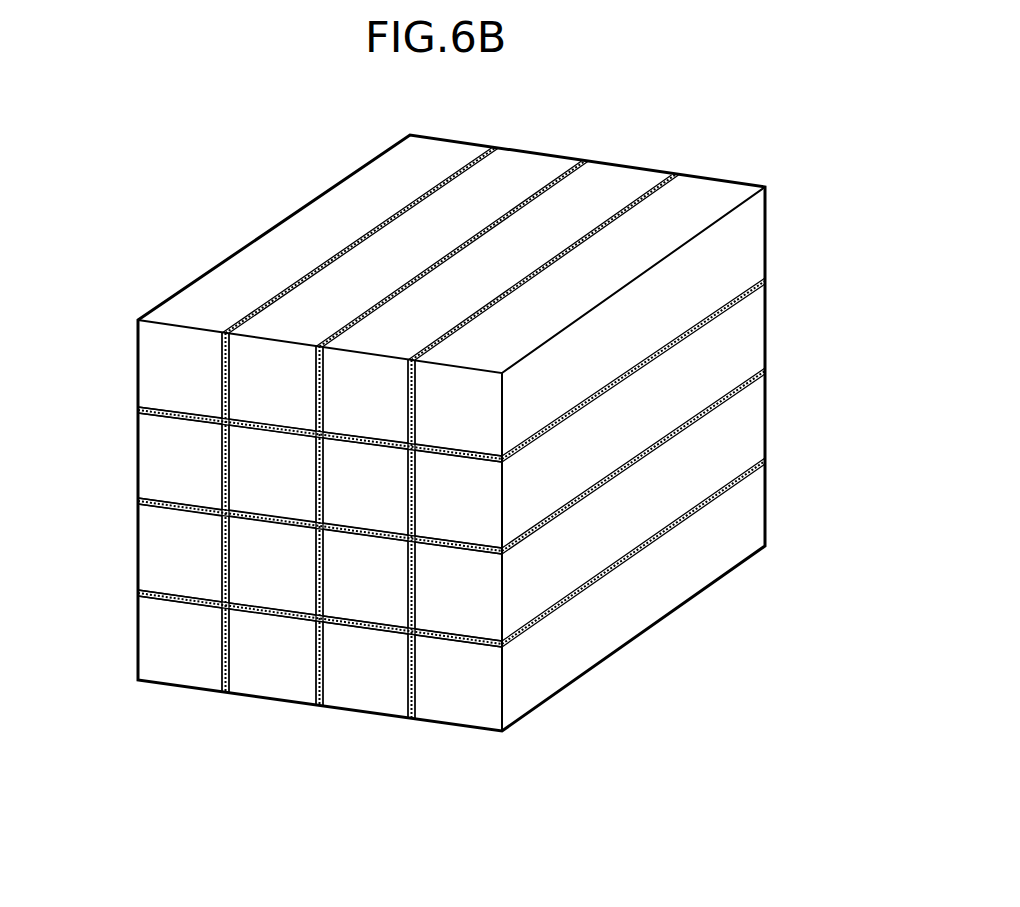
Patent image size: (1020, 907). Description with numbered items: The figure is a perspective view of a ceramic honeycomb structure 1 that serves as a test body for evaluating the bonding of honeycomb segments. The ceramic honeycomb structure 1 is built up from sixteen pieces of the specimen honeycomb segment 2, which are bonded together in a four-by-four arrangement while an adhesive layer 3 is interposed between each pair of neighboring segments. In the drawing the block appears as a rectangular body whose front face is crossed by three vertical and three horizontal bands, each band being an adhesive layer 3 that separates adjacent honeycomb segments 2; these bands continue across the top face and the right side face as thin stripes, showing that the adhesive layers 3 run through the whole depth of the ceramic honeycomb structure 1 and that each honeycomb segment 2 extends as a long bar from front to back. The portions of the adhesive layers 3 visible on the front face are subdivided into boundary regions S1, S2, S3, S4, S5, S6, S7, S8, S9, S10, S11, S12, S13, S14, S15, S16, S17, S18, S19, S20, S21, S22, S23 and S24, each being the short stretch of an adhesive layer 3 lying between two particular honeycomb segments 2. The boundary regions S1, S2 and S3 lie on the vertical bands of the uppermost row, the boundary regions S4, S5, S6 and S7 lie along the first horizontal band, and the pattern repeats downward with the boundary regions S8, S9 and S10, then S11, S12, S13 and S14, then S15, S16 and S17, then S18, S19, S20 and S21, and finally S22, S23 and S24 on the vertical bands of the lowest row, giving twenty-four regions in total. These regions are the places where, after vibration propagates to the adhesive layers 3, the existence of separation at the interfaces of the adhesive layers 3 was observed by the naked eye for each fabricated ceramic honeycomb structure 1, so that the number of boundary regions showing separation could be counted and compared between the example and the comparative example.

The ceramic honeycomb structure 1 is at (625, 152).
The specimen honeycomb segment 2 is at (387, 327).
The adhesive layer 3 is at (138, 410).
The boundary region S1 is at (222, 346).
The boundary region S2 is at (316, 364).
The boundary region S3 is at (408, 376).
The boundary region S4 is at (208, 413).
The boundary region S5 is at (303, 428).
The boundary region S6 is at (398, 442).
The boundary region S7 is at (458, 450).
The boundary region S8 is at (222, 438).
The boundary region S9 is at (316, 455).
The boundary region S10 is at (408, 466).
The boundary region S11 is at (208, 504).
The boundary region S12 is at (303, 518).
The boundary region S13 is at (398, 532).
The boundary region S14 is at (458, 540).
The boundary region S15 is at (222, 532).
The boundary region S16 is at (316, 546).
The boundary region S17 is at (408, 558).
The boundary region S18 is at (208, 597).
The boundary region S19 is at (303, 610).
The boundary region S20 is at (398, 624).
The boundary region S21 is at (458, 632).
The boundary region S22 is at (222, 643).
The boundary region S23 is at (316, 653).
The boundary region S24 is at (408, 665).